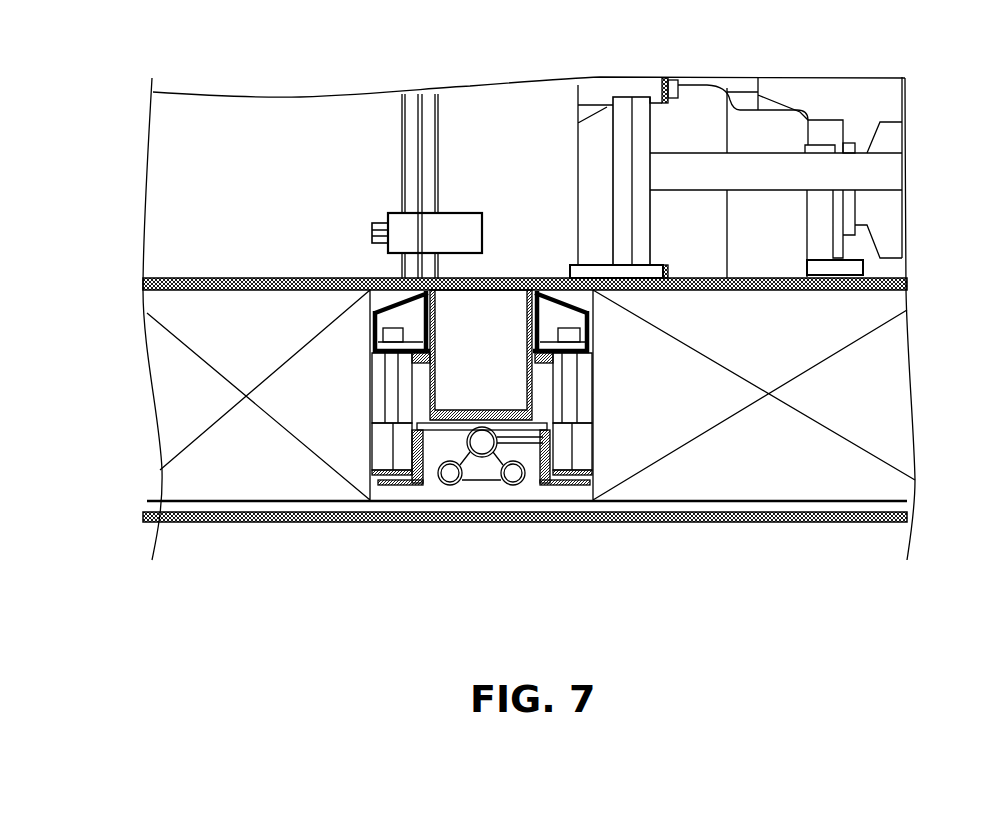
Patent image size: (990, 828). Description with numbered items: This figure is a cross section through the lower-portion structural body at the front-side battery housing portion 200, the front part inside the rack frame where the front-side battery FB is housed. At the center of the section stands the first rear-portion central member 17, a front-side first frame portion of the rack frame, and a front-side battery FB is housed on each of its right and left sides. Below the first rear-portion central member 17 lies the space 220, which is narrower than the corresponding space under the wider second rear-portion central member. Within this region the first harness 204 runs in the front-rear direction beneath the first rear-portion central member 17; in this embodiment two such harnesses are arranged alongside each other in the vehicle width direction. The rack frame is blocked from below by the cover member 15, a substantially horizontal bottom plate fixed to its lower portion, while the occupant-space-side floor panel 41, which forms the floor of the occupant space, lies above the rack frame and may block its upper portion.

The first rear-portion central member 17 is at (423, 335).
The front-side battery housing portion 200 is at (545, 300).
The occupant-space-side floor panel 41 is at (903, 270).
The space 220 is at (436, 453).
The first harness 204 is at (442, 486).
The cover member 15 is at (785, 522).
The front-side battery FB is at (180, 438).